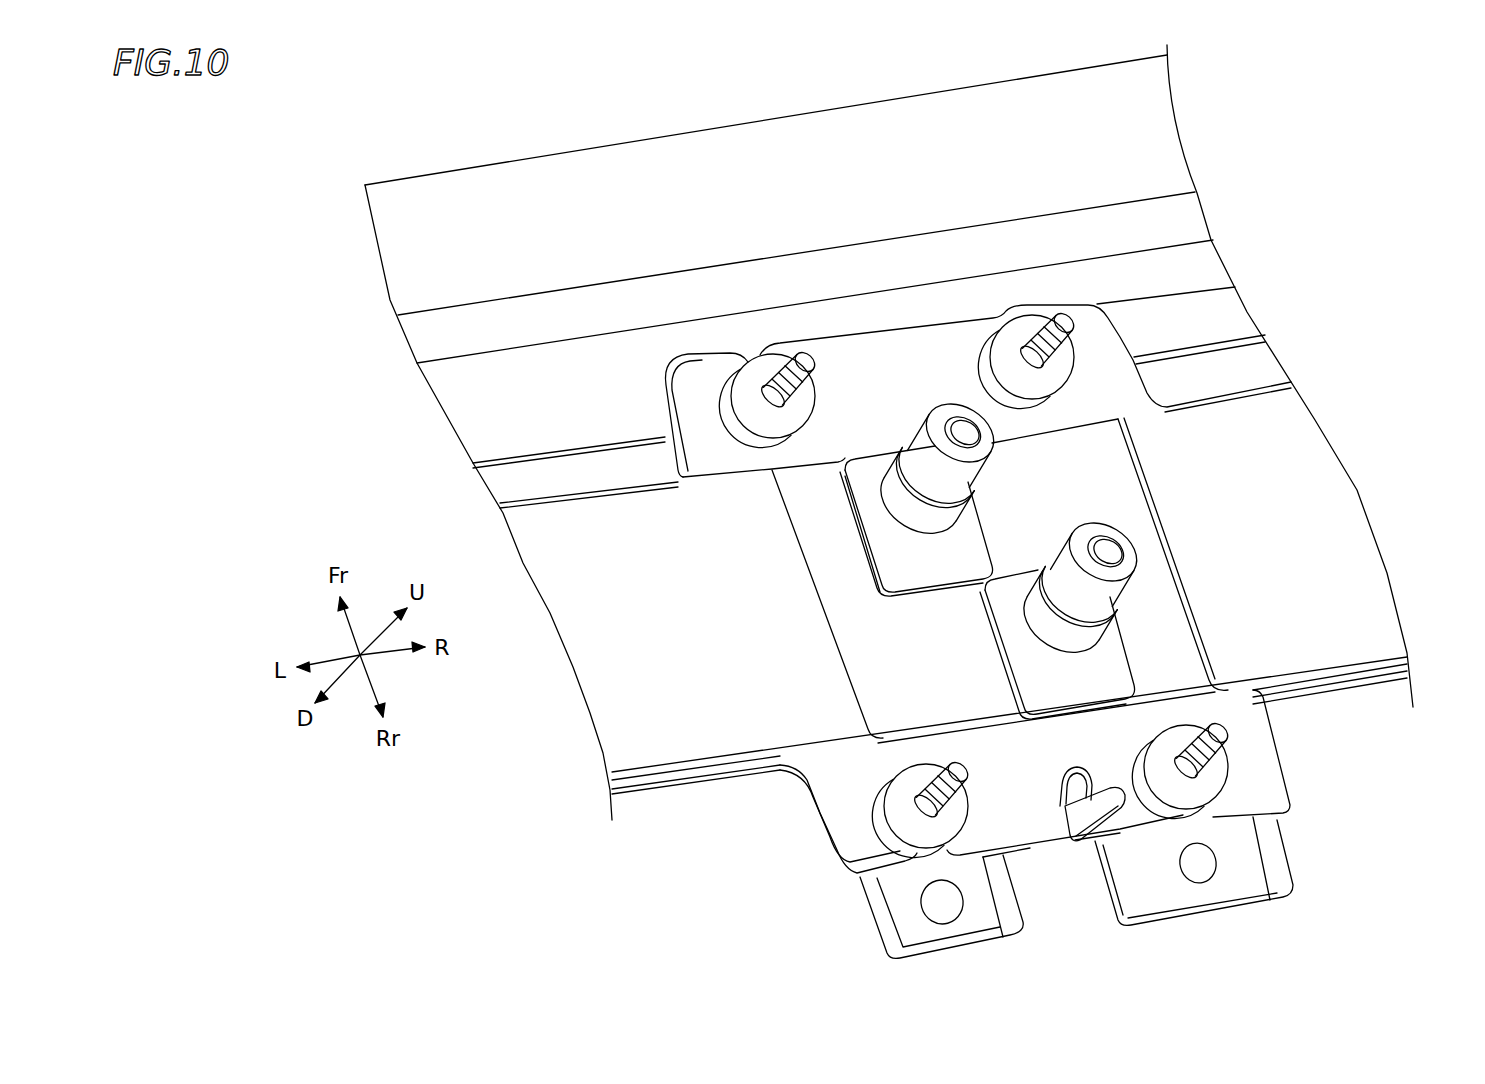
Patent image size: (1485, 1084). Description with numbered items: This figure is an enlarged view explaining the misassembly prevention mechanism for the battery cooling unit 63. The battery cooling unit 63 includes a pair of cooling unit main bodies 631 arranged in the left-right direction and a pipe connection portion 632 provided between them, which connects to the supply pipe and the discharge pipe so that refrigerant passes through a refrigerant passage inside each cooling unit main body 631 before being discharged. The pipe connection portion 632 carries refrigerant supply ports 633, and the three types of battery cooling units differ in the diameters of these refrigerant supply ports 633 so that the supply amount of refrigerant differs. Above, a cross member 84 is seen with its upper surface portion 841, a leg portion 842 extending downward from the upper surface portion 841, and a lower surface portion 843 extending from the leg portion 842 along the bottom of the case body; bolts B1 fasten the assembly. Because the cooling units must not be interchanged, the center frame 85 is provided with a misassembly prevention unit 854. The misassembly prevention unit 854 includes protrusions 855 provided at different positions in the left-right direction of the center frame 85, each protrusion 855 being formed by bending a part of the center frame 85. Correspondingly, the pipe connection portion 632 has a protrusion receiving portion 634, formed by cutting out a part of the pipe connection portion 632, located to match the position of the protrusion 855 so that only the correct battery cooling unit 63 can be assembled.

The cross member 84 is at (889, 432).
The upper surface portion 841 is at (713, 165).
The leg portion 842 is at (1160, 222).
The lower surface portion 843 is at (1203, 313).
The bolt B1 is at (1063, 323).
The battery cooling unit 63 is at (967, 677).
The cooling unit main body 631 is at (678, 717).
The pipe connection portion 632 is at (973, 680).
The refrigerant supply port 633 is at (958, 430).
The protrusion receiving portion 634 is at (1060, 806).
The center frame 85 is at (1083, 824).
The misassembly prevention unit 854 is at (1036, 824).
The protrusion 855 is at (1127, 857).